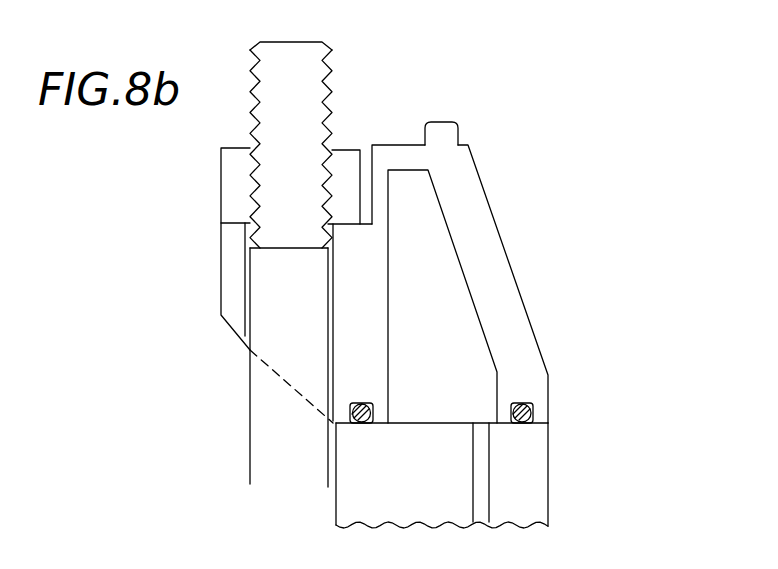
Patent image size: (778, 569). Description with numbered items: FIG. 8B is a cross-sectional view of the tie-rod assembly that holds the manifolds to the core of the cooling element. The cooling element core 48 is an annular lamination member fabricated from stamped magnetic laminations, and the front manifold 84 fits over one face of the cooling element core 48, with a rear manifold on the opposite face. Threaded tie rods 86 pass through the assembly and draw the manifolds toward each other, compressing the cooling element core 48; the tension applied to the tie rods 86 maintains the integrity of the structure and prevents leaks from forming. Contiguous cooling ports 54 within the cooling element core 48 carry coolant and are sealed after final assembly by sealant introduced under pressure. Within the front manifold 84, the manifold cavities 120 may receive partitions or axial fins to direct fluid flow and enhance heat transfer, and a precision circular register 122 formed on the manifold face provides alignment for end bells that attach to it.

The cooling element core 48 is at (525, 478).
The cooling ports 54 is at (483, 453).
The front manifold 84 is at (503, 302).
The tie rods 86 is at (272, 422).
The manifold cavities 120 is at (430, 263).
The precision circular register 122 is at (443, 120).